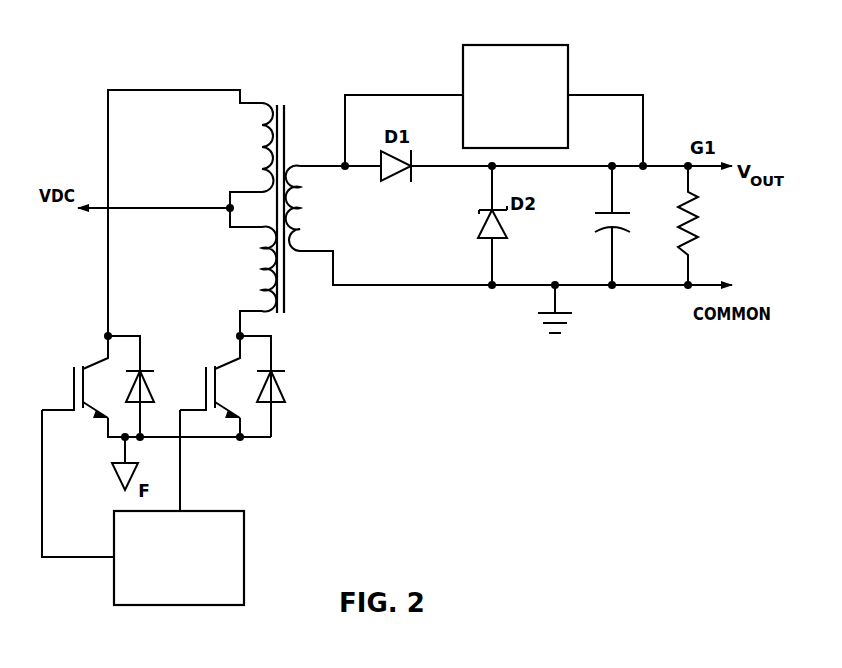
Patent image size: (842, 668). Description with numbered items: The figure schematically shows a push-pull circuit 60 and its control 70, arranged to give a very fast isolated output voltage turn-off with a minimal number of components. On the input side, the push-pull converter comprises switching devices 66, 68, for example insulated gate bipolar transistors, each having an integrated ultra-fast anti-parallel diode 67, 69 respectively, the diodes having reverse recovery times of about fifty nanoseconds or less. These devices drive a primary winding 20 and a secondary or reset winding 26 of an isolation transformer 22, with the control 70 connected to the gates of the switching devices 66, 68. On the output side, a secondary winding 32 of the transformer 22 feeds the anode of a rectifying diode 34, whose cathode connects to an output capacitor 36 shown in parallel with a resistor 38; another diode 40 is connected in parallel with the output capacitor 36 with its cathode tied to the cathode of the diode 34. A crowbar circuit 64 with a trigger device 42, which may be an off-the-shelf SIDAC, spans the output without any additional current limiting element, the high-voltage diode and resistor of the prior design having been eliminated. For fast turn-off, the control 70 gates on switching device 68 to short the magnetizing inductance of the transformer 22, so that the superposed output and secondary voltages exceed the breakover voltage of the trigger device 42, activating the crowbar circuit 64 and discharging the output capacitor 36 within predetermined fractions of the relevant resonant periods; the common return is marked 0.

The primary winding 20 is at (247, 267).
The isolation transformer 22 is at (286, 111).
The secondary (or reset) winding 26 is at (262, 103).
The secondary winding 32 is at (312, 220).
The rectifying diode 34 is at (399, 178).
The output capacitor 36 is at (603, 224).
The resistor 38 is at (687, 201).
The diode 40 is at (484, 226).
The trigger device 42 is at (532, 135).
The push-pull circuit 60 is at (634, 424).
The crowbar circuit 64 is at (637, 126).
The switching device 66 is at (258, 465).
The anti-parallel diode 67 is at (283, 382).
The switching device 68 is at (78, 336).
The anti-parallel diode 69 is at (151, 387).
The control 70 is at (197, 581).
The ground reference 0 is at (562, 317).